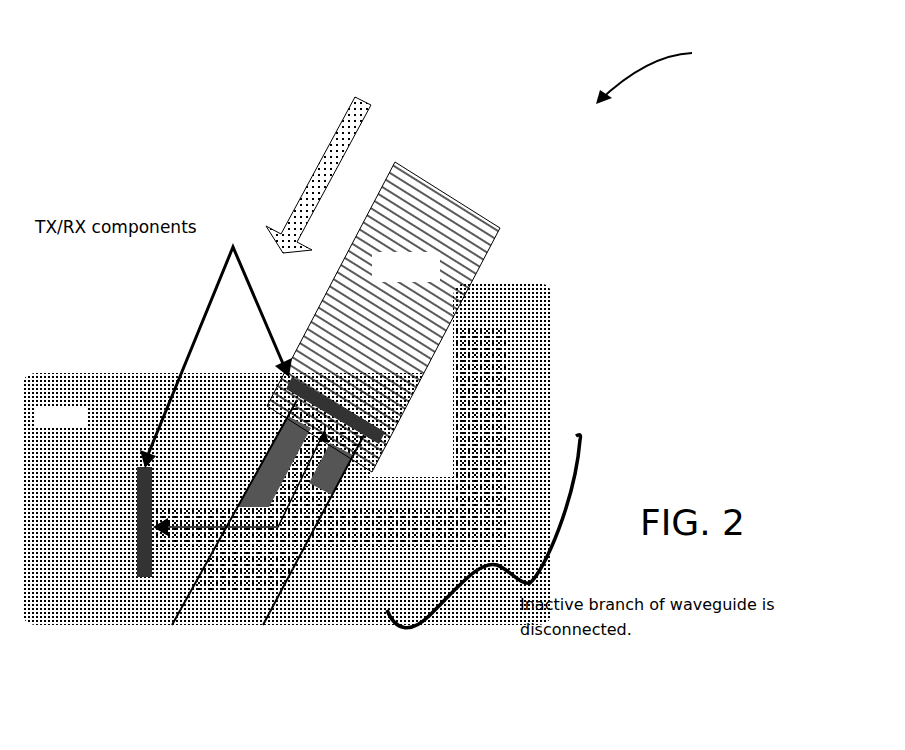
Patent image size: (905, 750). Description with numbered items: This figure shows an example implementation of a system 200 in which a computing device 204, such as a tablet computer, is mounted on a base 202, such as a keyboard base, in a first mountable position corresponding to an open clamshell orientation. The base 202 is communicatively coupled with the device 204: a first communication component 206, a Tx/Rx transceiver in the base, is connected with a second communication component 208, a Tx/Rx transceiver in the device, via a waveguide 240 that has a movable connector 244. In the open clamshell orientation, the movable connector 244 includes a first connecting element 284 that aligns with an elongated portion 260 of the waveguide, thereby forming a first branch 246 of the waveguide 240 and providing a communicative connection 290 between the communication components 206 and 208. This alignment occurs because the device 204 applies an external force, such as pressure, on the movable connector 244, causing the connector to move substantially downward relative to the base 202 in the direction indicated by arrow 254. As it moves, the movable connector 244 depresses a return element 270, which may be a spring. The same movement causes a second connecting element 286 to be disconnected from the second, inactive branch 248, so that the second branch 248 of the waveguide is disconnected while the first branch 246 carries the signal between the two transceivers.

The system 200 is at (666, 58).
The base 202 is at (50, 372).
The device 204 is at (483, 212).
The first communication component 206 is at (124, 522).
The second communication component 208 is at (335, 407).
The waveguide 240 is at (306, 543).
The movable connector 244 is at (277, 467).
The first branch 246 is at (340, 453).
The second branch 248 is at (512, 372).
The arrow 254 is at (327, 143).
The elongated portion 260 is at (185, 547).
The return element 270 is at (242, 598).
The first connecting element 284 is at (277, 475).
The second connecting element 286 is at (290, 578).
The communicative connection 290 is at (330, 487).